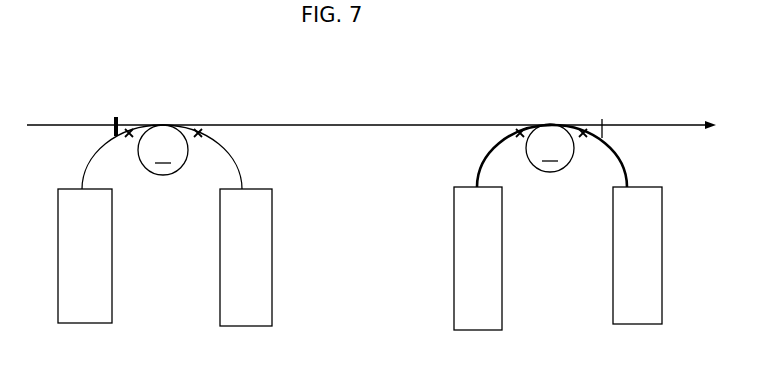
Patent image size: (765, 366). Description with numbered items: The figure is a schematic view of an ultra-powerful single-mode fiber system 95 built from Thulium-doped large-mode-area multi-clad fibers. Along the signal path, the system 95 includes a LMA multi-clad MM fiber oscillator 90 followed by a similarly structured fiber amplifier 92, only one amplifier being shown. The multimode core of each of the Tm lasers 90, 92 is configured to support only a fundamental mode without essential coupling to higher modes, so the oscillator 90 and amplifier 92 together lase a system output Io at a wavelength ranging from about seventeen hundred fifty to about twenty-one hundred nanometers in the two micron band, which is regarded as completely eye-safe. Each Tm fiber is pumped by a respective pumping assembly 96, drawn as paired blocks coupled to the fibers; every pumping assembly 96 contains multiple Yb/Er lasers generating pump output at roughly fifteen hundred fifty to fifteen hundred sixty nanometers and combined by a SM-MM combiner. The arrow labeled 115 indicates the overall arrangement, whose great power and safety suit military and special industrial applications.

The current sensing arrangement 115 is at (375, 181).
The ultra-powerful SM fiber system 95 is at (375, 109).
The LMA multi-clad MM fiber oscillator 90 is at (162, 144).
The fiber amplifier 92 is at (552, 143).
The pumping assembly 96 is at (75, 265).